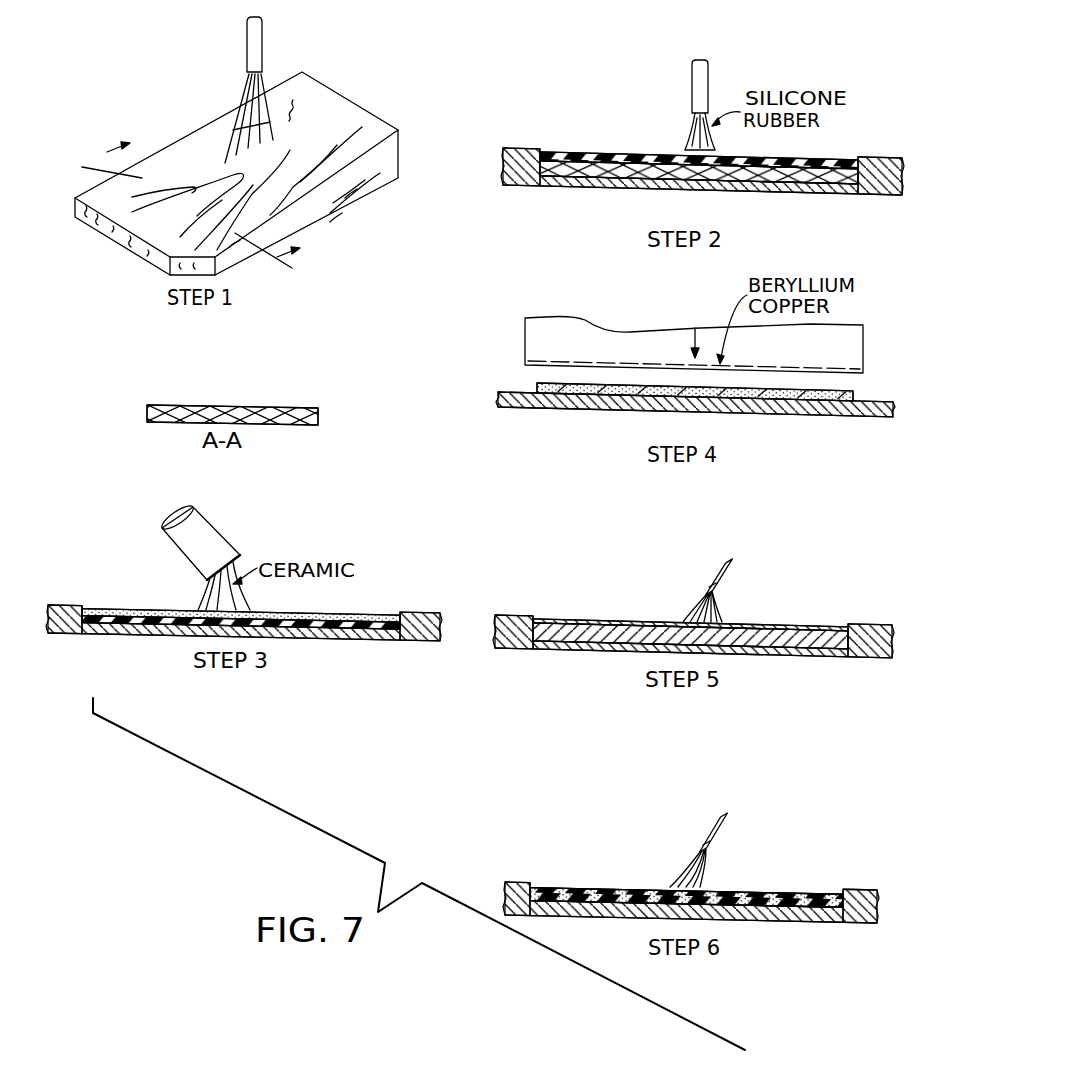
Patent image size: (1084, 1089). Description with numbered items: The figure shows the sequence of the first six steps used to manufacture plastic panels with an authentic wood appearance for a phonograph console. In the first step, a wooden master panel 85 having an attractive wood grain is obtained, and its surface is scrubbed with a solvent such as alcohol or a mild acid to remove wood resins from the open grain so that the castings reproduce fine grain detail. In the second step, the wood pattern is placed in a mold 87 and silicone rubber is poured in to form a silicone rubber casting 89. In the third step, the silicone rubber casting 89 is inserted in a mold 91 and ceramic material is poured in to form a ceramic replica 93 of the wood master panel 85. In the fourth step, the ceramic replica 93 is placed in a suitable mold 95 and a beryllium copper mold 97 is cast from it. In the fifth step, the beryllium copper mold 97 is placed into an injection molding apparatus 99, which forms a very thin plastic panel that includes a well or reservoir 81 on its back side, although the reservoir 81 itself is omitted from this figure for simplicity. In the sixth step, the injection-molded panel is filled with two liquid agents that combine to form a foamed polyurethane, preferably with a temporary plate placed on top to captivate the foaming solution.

The well or reservoir 81 is at (597, 888).
The master wood panel 85 is at (337, 117).
The mold 87 is at (520, 158).
The silicone rubber casting 89 is at (825, 145).
The mold 91 is at (62, 610).
The ceramic replica 93 is at (362, 610).
The mold 95 is at (512, 398).
The beryllium copper mold 97 is at (570, 625).
The injection molding apparatus 99 is at (522, 620).